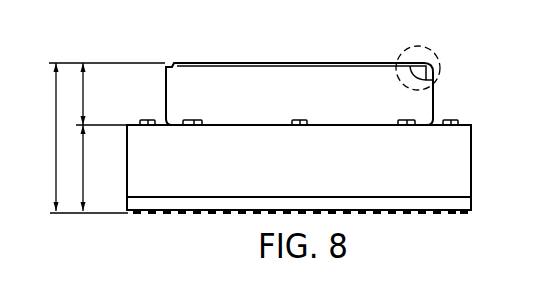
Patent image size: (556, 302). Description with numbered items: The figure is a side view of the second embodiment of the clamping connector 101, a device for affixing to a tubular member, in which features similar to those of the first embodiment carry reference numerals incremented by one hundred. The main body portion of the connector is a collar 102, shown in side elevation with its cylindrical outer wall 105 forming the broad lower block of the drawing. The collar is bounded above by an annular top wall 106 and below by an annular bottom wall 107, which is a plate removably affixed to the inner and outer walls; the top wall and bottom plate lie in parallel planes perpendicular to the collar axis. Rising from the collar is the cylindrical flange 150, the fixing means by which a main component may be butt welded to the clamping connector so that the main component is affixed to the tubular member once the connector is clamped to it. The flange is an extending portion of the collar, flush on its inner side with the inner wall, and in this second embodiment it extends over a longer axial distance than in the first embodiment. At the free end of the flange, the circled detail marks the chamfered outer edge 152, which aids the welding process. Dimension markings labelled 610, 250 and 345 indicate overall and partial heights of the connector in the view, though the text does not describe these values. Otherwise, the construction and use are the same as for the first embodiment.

The clamping connector 101 is at (148, 50).
The collar 102 is at (448, 105).
The cylindrical outer wall 105 is at (468, 167).
The annular top wall 106 is at (465, 124).
The annular bottom wall 107 is at (467, 206).
The cylindrical flange 150 is at (445, 82).
The chamfered outer edge 152 is at (435, 55).
The overall height dimension 610 is at (93, 138).
The lid height dimension 250 is at (101, 94).
The substrate height dimension 345 is at (100, 168).